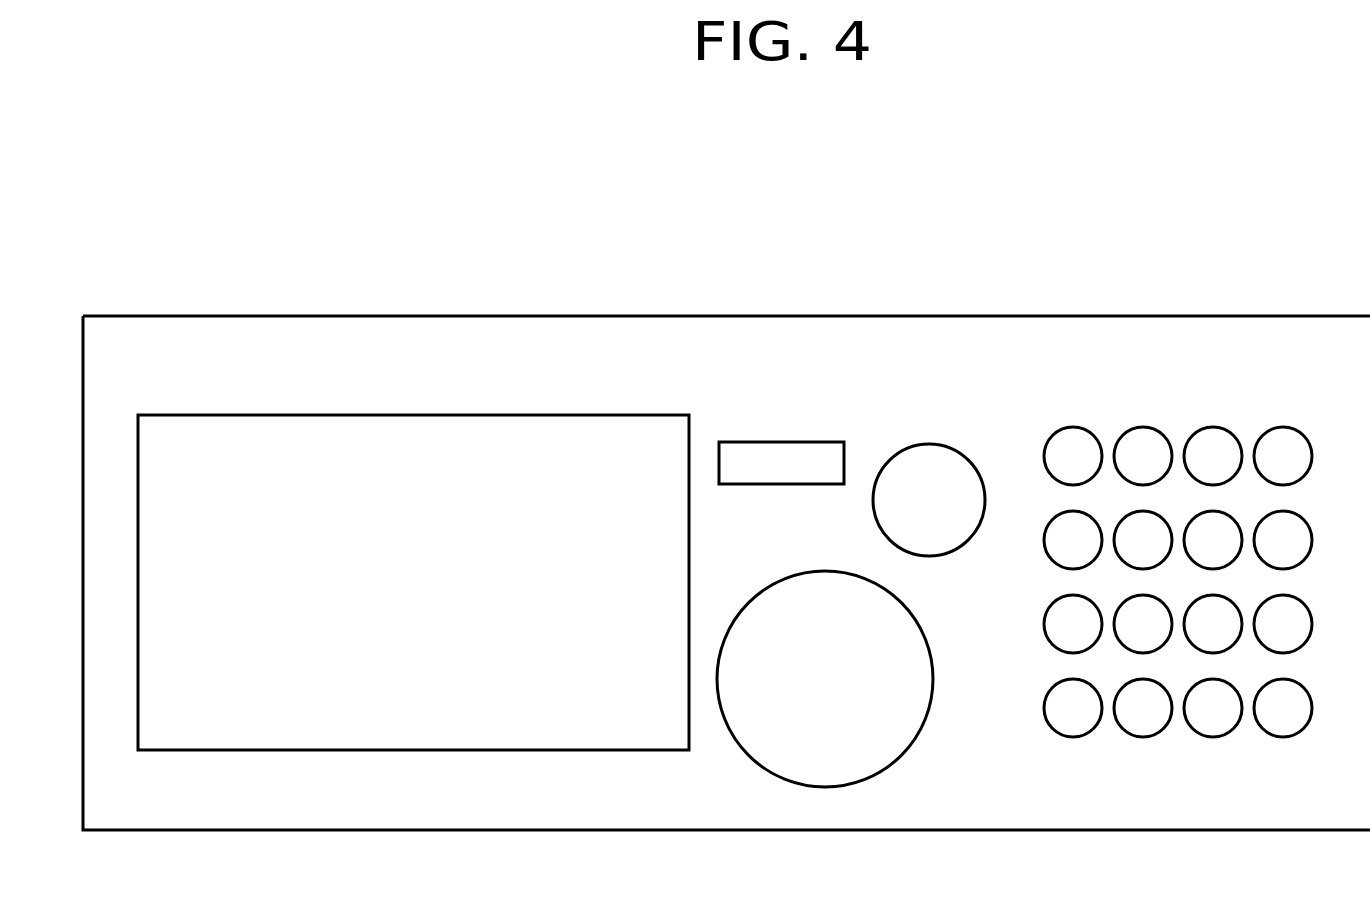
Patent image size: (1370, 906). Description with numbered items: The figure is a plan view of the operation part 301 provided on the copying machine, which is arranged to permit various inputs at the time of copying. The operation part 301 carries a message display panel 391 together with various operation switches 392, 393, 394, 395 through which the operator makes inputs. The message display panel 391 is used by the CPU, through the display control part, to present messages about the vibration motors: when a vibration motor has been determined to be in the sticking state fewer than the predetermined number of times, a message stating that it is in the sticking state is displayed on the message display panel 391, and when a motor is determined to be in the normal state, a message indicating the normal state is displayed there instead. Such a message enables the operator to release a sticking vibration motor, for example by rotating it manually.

The operation part 301 is at (955, 316).
The message display panel 391 is at (271, 428).
The operation switch 392 is at (770, 452).
The operation switch 393 is at (940, 455).
The operation switch 394 is at (1198, 460).
The operation switch 395 is at (907, 716).